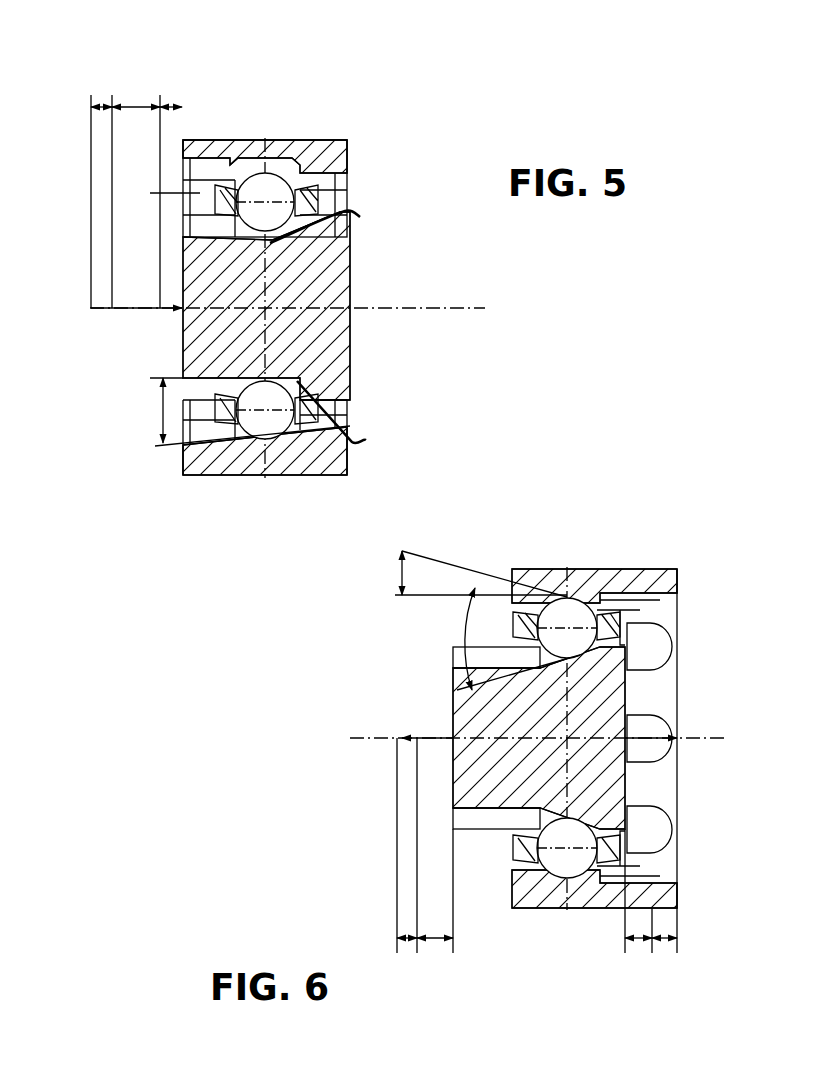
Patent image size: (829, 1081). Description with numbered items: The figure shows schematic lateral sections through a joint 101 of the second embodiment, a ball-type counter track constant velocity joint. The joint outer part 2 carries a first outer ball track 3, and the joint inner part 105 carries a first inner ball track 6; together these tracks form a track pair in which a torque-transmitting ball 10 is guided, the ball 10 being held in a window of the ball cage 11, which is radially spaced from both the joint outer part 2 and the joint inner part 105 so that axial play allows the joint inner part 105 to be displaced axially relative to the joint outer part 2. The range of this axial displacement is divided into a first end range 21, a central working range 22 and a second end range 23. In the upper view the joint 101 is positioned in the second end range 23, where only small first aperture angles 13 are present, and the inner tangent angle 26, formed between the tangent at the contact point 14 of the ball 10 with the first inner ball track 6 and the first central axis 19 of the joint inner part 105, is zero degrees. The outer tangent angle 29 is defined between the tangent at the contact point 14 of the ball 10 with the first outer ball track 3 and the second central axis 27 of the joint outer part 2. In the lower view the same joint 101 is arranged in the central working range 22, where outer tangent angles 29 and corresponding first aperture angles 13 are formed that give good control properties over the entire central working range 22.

In FIG. 5, the joint outer part 2 is at (190, 470).
In FIG. 5, the first outer ball track 3 is at (150, 193).
In FIG. 5, the first inner ball track 6 is at (366, 440).
In FIG. 5, the ball 10 is at (270, 200).
In FIG. 6, the ball 10 is at (582, 616).
In FIG. 5, the ball cage 11 is at (218, 196).
In FIG. 6, the ball cage 11 is at (610, 624).
In FIG. 5, the first aperture angle 13 is at (236, 412).
In FIG. 6, the first aperture angle 13 is at (509, 639).
In FIG. 5, the contact point 14 is at (360, 213).
In FIG. 6, the contact point 14 is at (576, 598).
In FIG. 5, the first central axis 19 is at (450, 308).
In FIG. 6, the first central axis 19 is at (385, 738).
In FIG. 5, the first end range 21 is at (102, 100).
In FIG. 6, the central working range 22 is at (445, 950).
In FIG. 5, the second end range 23 is at (168, 104).
In FIG. 5, the inner tangent angle 26 is at (158, 378).
In FIG. 5, the second central axis 27 is at (465, 308).
In FIG. 6, the second central axis 27 is at (382, 738).
In FIG. 6, the outer tangent angle 29 is at (456, 575).
In FIG. 5, the joint 101 is at (375, 200).
In FIG. 6, the joint 101 is at (548, 548).
In FIG. 5, the joint inner part 105 is at (333, 320).
In FIG. 6, the joint inner part 105 is at (610, 702).